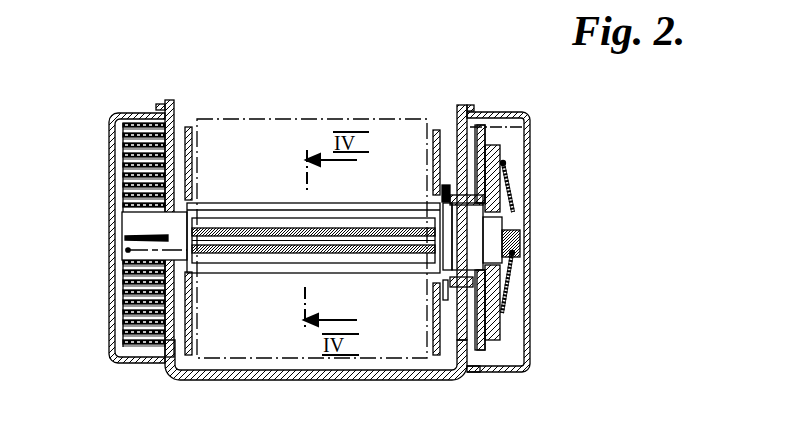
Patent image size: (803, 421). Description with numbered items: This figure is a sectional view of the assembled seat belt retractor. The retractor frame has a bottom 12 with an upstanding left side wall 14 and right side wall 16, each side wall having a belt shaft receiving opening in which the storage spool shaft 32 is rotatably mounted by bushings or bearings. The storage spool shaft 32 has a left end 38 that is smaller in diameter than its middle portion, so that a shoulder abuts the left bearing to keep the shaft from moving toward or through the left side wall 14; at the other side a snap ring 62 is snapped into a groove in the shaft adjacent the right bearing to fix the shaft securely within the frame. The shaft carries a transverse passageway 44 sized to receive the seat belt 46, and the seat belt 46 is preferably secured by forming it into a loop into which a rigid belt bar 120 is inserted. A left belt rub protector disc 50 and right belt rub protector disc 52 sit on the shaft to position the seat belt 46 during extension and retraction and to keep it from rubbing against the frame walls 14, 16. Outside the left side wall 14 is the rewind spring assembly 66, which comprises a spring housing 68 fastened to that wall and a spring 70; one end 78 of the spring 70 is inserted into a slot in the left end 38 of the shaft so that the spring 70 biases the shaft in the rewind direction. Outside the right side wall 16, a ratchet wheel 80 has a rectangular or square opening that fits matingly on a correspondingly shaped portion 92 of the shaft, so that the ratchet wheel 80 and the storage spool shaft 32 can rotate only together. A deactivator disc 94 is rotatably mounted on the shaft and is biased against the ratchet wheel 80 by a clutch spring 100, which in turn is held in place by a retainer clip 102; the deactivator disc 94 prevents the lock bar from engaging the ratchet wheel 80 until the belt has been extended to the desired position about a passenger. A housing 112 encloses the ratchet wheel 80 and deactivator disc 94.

The bottom 12 is at (305, 381).
The left side wall 14 is at (171, 100).
The right side wall 16 is at (462, 105).
The storage spool shaft 32 is at (256, 284).
The left end 38 is at (126, 252).
The transverse passageway 44 is at (364, 221).
The seat belt 46 is at (233, 232).
The left belt rub protector disc 50 is at (189, 127).
The right belt rub protector disc 52 is at (436, 150).
The snap ring 62 is at (443, 186).
The rewind spring assembly 66 is at (106, 95).
The spring housing 68 is at (135, 113).
The spring 70 is at (125, 145).
The end of spring 78 is at (128, 236).
The ratchet wheel 80 is at (481, 139).
The rectangular or square shaped portion 92 is at (512, 244).
The deactivator disc 94 is at (500, 150).
The clutch spring 100 is at (512, 195).
The retainer clip 102 is at (512, 262).
The housing 112 is at (487, 373).
The belt bar 120 is at (388, 250).